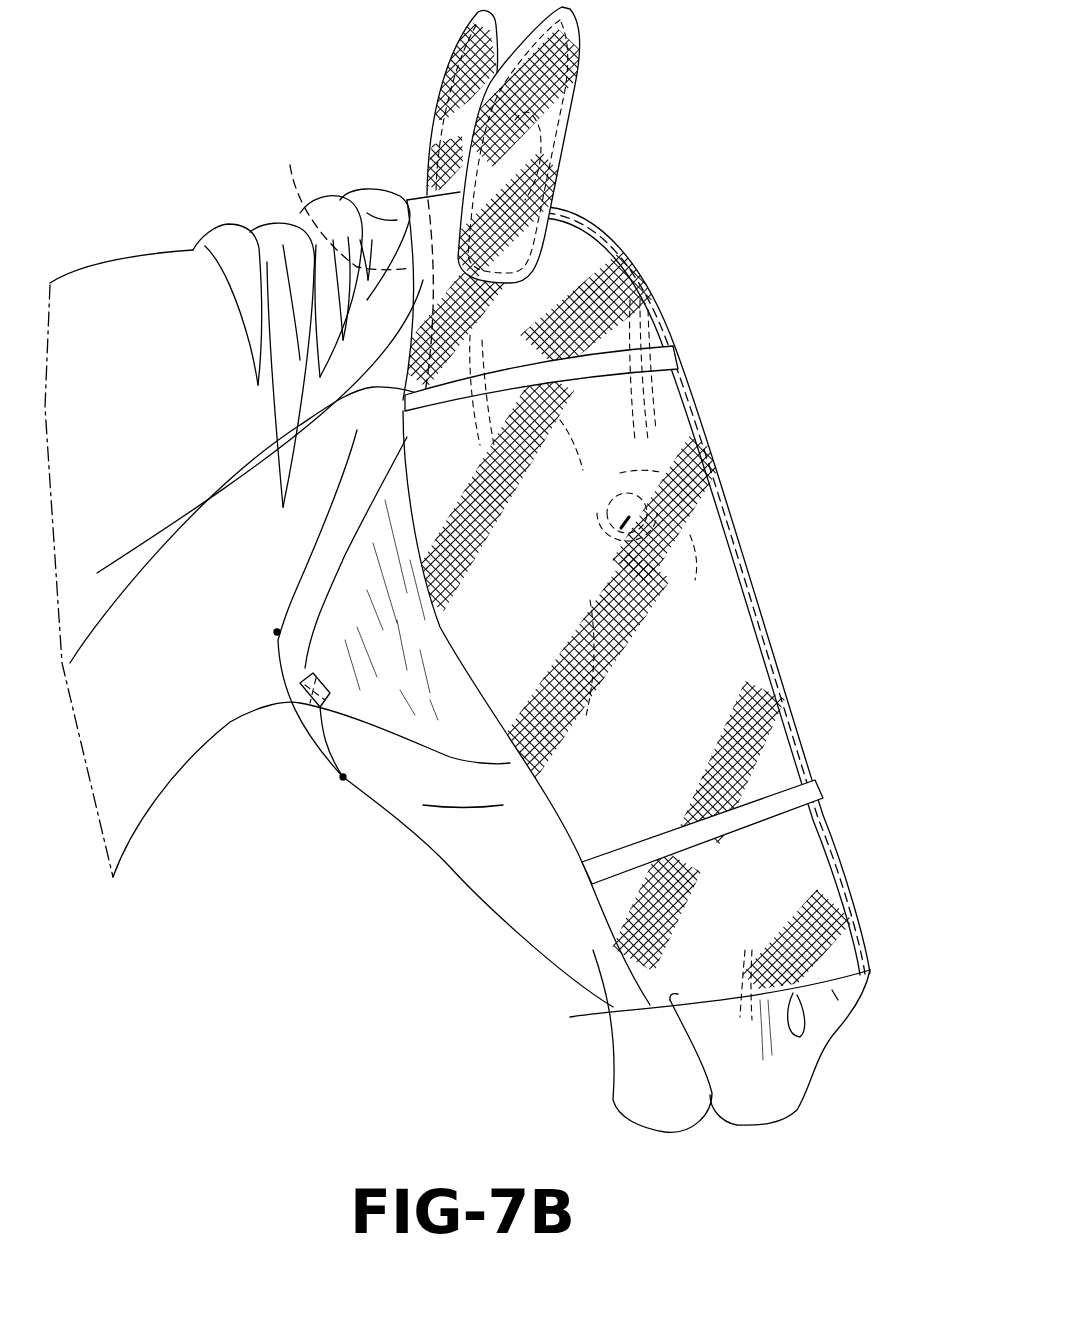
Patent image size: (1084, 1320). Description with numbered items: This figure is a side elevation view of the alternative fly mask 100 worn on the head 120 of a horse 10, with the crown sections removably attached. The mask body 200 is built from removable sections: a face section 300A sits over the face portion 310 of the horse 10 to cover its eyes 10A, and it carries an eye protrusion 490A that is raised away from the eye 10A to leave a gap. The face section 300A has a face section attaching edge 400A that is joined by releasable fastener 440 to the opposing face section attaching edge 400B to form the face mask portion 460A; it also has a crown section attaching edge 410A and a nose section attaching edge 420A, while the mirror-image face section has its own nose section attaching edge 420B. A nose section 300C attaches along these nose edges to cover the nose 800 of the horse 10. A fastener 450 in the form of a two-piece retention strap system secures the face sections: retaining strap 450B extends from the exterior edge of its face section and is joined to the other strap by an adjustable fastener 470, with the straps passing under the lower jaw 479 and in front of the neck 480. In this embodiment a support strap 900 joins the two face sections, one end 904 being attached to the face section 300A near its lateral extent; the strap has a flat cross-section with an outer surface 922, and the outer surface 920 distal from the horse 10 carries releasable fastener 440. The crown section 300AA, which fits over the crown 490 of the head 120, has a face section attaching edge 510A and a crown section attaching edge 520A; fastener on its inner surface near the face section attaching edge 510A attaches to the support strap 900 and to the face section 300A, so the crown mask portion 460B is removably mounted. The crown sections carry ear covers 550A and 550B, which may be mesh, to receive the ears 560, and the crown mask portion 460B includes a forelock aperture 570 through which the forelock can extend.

The horse 10 is at (516, 1123).
The head 120 is at (715, 504).
The eyes 10A is at (623, 530).
The fly mask 100 is at (706, 640).
The body 200 is at (503, 880).
The face section 300A is at (440, 463).
The crown section 300AA is at (540, 307).
The nose section 300C is at (570, 1017).
The face portion 310 is at (822, 482).
The face section attaching edge 400A is at (835, 521).
The face section attaching edge 400B is at (728, 532).
The crown section attaching edge 410A is at (615, 373).
The nose section attaching edge 420A is at (767, 789).
The nose section attaching edge 420B is at (592, 884).
The releasable fastener 440 is at (784, 676).
The fastener 450 is at (388, 700).
The retaining strap 450B is at (353, 660).
The face mask portion 460A is at (752, 590).
The crown mask portion 460B is at (573, 203).
The fastener 470 is at (320, 690).
The lower jaw 479 is at (437, 837).
The neck 480 is at (217, 728).
The crown 490 is at (615, 250).
The eye protrusion 490A is at (637, 507).
The face section attaching edge 510A is at (630, 313).
The crown section attaching edge 520A is at (590, 220).
The ear cover 550A is at (547, 127).
The ear cover 550B is at (467, 50).
The ears 560 is at (443, 117).
The forelock aperture 570 is at (603, 350).
The nose 800 is at (757, 1097).
The support strap 900 is at (423, 255).
The end of support strap 904 is at (373, 387).
The outer surface of support strap 920 is at (423, 280).
The outer surface of support strap 922 is at (334, 202).